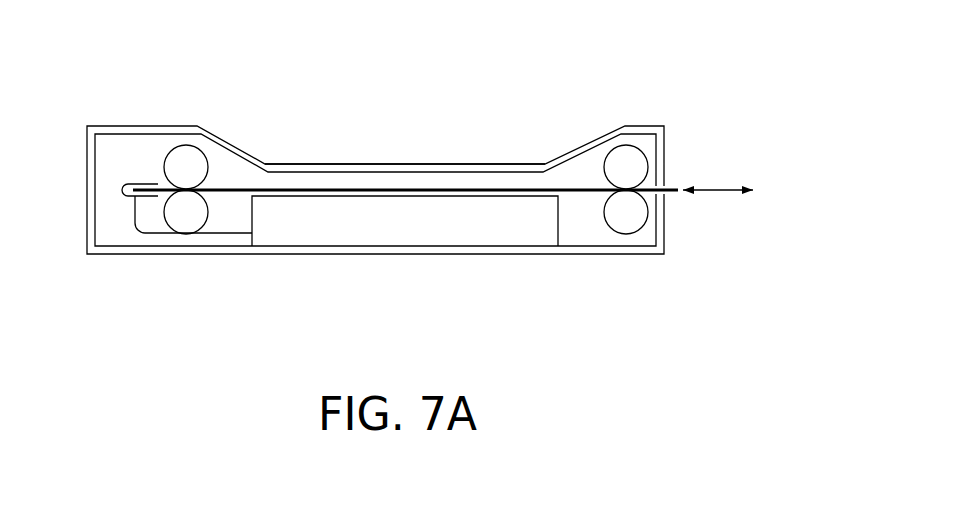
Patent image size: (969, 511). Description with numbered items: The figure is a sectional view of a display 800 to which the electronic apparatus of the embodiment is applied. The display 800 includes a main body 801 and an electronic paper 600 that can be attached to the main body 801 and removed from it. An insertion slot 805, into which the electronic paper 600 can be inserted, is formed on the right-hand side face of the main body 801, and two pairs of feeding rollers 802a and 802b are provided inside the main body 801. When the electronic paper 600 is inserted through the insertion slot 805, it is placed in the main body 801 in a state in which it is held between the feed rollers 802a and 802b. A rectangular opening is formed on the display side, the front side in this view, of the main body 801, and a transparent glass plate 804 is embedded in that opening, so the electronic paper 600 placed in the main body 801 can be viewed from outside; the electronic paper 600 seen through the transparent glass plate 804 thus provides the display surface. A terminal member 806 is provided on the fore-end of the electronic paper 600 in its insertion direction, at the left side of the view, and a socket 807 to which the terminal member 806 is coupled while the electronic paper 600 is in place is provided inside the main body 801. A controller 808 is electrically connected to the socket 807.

The display 800 is at (670, 71).
The main body 801 is at (147, 132).
The feeding rollers 802a is at (209, 150).
The feeding rollers 802b is at (626, 140).
The electronic paper 600 is at (393, 178).
The transparent glass plate 804 is at (465, 163).
The insertion slot 805 is at (666, 188).
The terminal member 806 is at (128, 184).
The socket 807 is at (126, 197).
The controller 808 is at (417, 236).